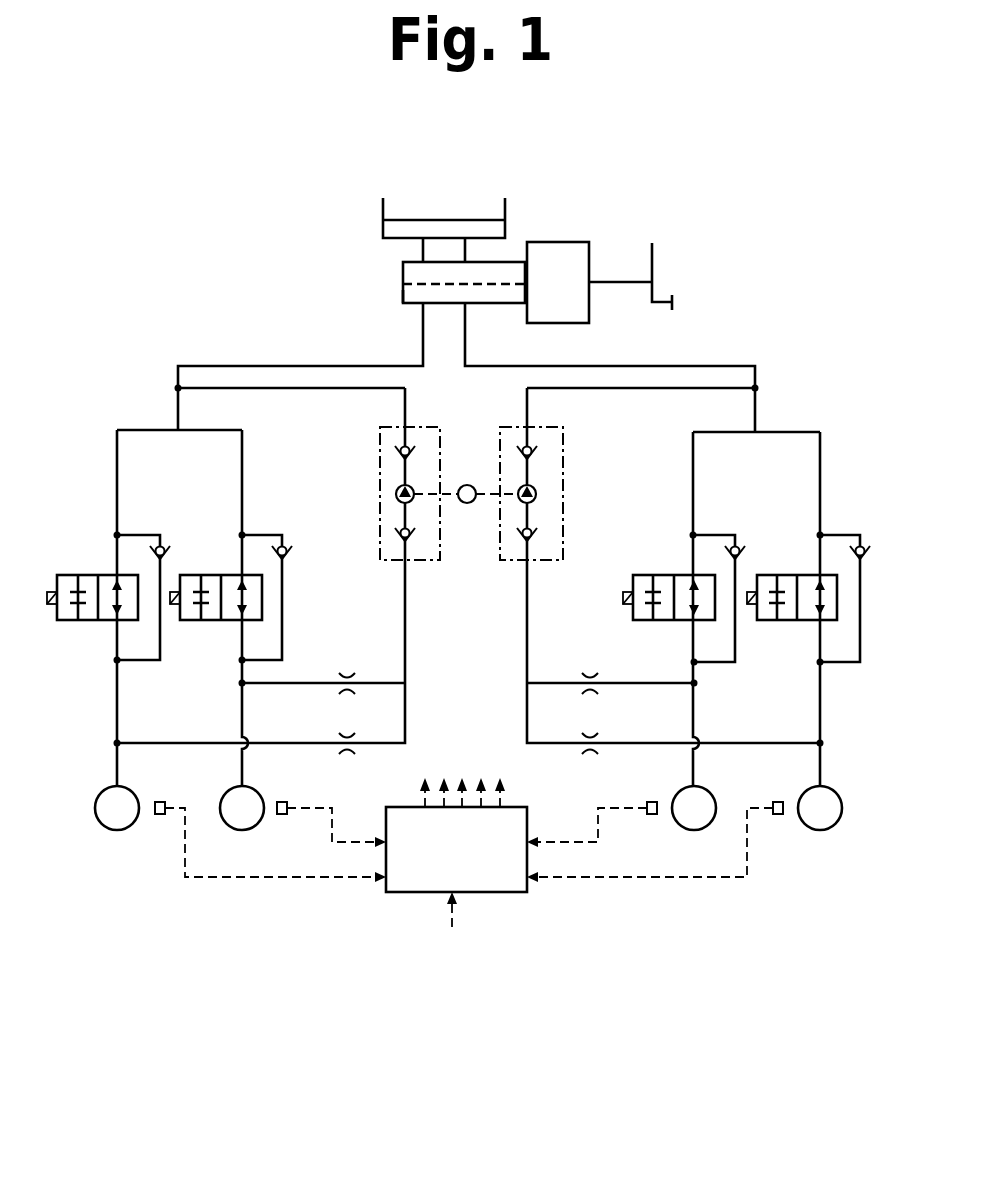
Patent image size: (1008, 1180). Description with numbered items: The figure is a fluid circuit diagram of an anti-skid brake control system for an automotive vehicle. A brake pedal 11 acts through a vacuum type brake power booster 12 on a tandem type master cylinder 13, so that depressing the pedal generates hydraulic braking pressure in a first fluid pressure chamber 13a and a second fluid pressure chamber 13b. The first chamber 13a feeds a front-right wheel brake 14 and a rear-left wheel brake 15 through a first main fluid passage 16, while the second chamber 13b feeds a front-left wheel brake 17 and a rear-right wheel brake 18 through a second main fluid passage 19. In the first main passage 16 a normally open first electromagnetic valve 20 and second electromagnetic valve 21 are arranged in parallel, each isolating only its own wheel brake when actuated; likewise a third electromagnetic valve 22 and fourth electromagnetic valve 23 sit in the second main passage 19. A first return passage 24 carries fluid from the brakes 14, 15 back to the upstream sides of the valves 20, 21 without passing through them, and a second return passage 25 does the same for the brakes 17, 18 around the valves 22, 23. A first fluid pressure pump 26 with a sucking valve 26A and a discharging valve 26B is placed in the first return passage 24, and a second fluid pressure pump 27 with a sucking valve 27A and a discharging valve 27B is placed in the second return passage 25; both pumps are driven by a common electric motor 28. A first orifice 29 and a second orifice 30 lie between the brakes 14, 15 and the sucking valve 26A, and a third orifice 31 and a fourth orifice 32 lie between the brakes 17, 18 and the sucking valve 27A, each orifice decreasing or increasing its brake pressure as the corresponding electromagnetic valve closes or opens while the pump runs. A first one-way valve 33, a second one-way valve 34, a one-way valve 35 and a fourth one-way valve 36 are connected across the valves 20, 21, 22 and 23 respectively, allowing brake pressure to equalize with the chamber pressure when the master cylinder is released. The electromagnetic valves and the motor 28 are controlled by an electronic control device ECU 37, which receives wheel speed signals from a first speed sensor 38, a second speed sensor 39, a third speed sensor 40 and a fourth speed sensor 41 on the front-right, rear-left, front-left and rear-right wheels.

The brake pedal 11 is at (655, 252).
The vacuum type brake power booster 12 is at (565, 242).
The tandem type master cylinder 13 is at (405, 272).
The first fluid pressure chamber 13a is at (488, 298).
The second fluid pressure chamber 13b is at (405, 292).
The front-right wheel brake 14 is at (825, 832).
The rear-left wheel brake 15 is at (712, 795).
The first main fluid passage 16 is at (713, 365).
The front-left wheel brake 17 is at (118, 832).
The rear-right wheel brake 18 is at (258, 795).
The second main fluid passage 19 is at (233, 365).
The first electromagnetic valve 20 is at (783, 575).
The second electromagnetic valve 21 is at (657, 575).
The third electromagnetic valve 22 is at (80, 575).
The fourth electromagnetic valve 23 is at (208, 575).
The first return passage 24 is at (527, 648).
The second return passage 25 is at (410, 618).
The first fluid pressure pump 26 is at (555, 485).
The sucking valve 26A is at (535, 530).
The discharging valve 26B is at (535, 447).
The second fluid pressure pump 27 is at (378, 483).
The sucking valve 27A is at (401, 540).
The discharging valve 27B is at (398, 447).
The electric motor 28 is at (467, 485).
The first orifice 29 is at (596, 756).
The second orifice 30 is at (590, 672).
The third orifice 31 is at (342, 756).
The fourth orifice 32 is at (345, 672).
The first one-way valve 33 is at (861, 545).
The second one-way valve 34 is at (736, 545).
The one-way valve 35 is at (162, 545).
The fourth one-way valve 36 is at (284, 546).
The electronic control unit (ECU) 37 is at (500, 893).
The first speed sensor 38 is at (780, 818).
The second speed sensor 39 is at (655, 816).
The third speed sensor 40 is at (161, 818).
The fourth speed sensor 41 is at (287, 818).